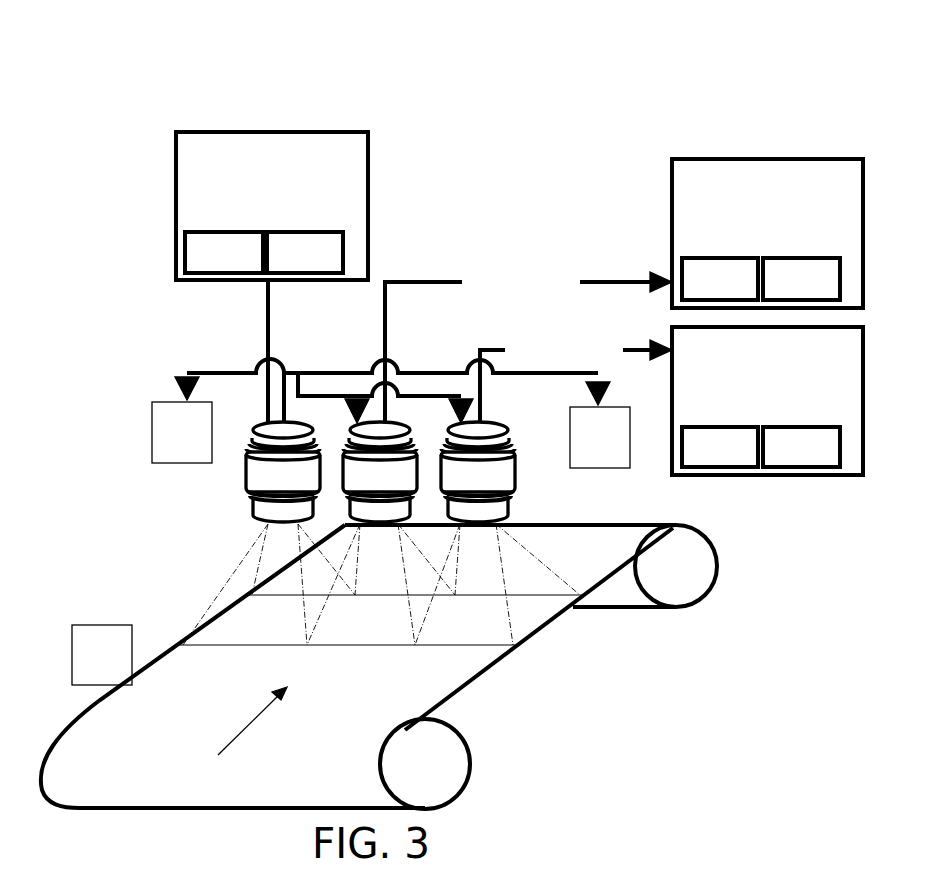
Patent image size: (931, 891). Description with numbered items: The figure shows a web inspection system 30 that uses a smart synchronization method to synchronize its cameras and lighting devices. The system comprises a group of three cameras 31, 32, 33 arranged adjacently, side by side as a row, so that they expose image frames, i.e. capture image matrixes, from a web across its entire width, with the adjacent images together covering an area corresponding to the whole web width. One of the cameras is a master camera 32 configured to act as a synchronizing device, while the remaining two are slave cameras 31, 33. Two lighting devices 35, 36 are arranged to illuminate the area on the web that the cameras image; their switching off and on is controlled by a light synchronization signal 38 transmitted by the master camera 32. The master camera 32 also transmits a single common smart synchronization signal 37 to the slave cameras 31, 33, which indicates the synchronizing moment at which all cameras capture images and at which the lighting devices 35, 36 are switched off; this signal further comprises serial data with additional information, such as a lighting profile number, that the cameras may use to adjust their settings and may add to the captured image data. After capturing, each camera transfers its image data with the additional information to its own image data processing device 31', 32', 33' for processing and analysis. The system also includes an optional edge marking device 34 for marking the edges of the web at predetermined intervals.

The web inspection system 30 is at (120, 40).
The slave camera 31 is at (380, 472).
The master camera 32 is at (283, 472).
The slave camera 33 is at (478, 472).
The image data processing device 31' is at (624, 253).
The image data processing device 32' is at (272, 240).
The image data processing device 33' is at (671, 445).
The edge marking device 34 is at (102, 655).
The lighting device 35 is at (600, 437).
The lighting device 36 is at (182, 432).
The smart synchronization signal 37 is at (318, 396).
The light synchronization signal 38 is at (185, 372).